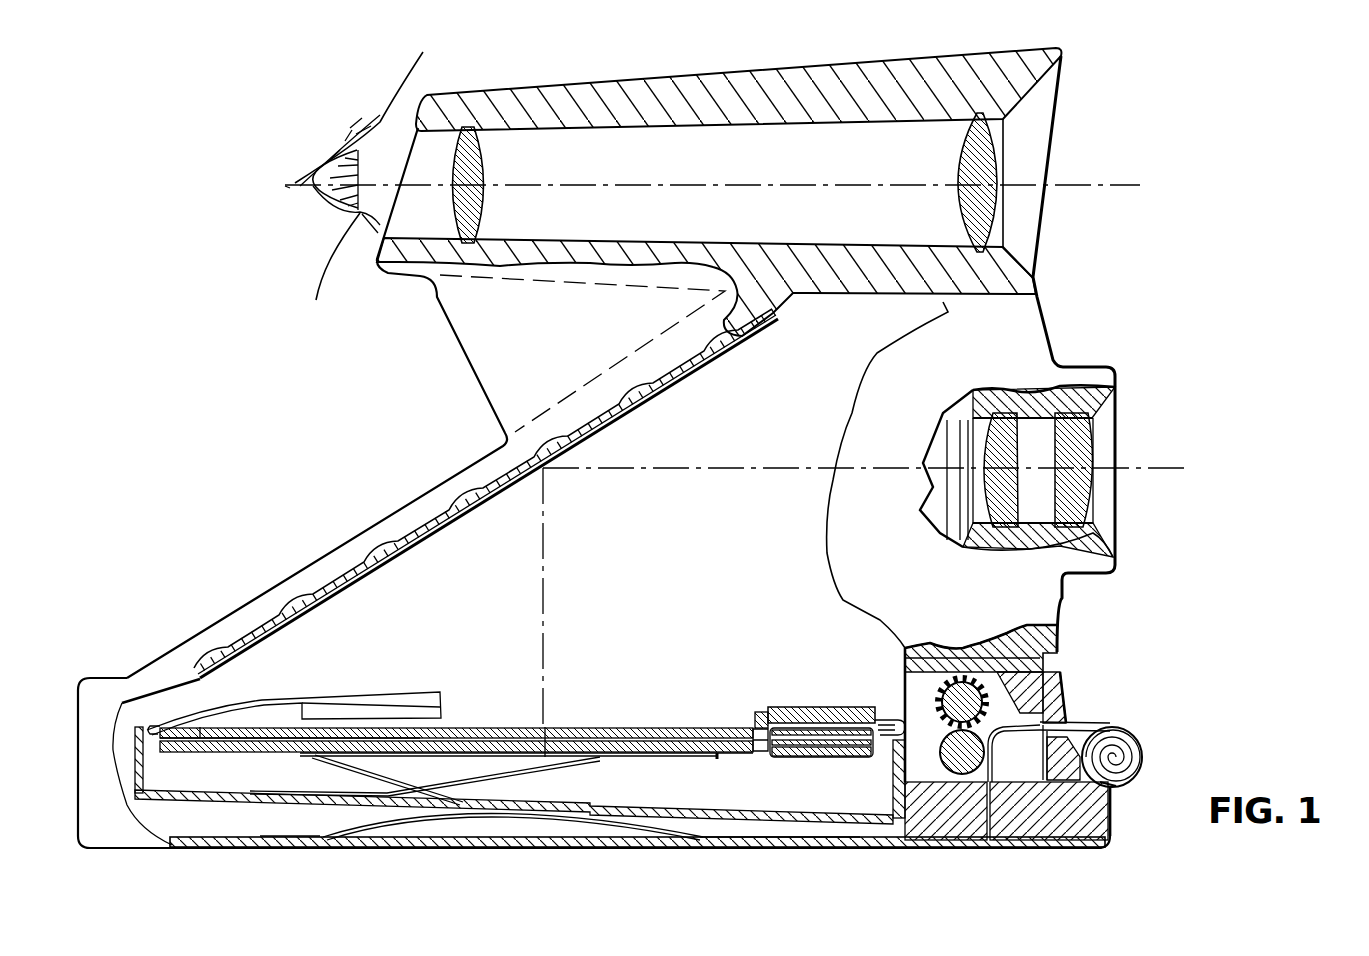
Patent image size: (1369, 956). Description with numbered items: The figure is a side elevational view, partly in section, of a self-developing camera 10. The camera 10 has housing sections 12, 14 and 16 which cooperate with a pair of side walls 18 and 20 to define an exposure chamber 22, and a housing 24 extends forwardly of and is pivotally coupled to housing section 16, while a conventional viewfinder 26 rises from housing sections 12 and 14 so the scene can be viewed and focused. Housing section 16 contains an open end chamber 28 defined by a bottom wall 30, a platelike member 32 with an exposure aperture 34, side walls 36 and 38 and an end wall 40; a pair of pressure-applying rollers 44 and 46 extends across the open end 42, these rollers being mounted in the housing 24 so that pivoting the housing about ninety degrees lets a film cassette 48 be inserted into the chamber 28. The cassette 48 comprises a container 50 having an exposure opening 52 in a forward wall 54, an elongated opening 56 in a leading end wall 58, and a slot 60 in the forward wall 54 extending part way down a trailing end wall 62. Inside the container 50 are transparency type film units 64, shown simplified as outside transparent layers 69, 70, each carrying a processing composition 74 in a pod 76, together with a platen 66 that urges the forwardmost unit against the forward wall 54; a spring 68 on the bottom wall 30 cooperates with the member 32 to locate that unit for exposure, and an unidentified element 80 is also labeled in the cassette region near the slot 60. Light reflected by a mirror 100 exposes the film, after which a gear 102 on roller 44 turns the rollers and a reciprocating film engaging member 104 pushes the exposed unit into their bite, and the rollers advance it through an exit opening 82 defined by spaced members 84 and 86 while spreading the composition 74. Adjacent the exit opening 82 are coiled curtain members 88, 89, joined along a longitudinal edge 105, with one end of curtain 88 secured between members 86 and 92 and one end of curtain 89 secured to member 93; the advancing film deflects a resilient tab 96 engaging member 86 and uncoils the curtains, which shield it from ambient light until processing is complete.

The camera 10 is at (1064, 158).
The housing section 12 is at (1127, 501).
The housing section 14 is at (418, 487).
The housing section 16 is at (427, 856).
The side wall 18 is at (870, 380).
The side wall 20 is at (606, 520).
The exposure chamber 22 is at (375, 606).
The housing 24 is at (949, 856).
The viewfinder 26 is at (661, 72).
The open end chamber 28 is at (261, 825).
The bottom wall 30 is at (535, 845).
The platelike member 32 is at (787, 707).
The exposure aperture 34 is at (758, 710).
The side wall 36 is at (93, 836).
The side wall 38 is at (206, 831).
The end wall 40 is at (77, 720).
The open end 42 is at (927, 828).
The roller 44 is at (961, 690).
The roller 46 is at (958, 766).
The film cassette 48 is at (631, 709).
The container 50 is at (780, 829).
The exposure opening 52 is at (755, 717).
The forward wall 54 is at (893, 717).
The elongated opening 56 is at (903, 733).
The leading end wall 58 is at (903, 766).
The slot 60 is at (141, 721).
The trailing end wall 62 is at (143, 770).
The film unit 64 is at (720, 770).
The platen 66 is at (573, 767).
The spring 68 is at (510, 813).
The outside transparent layer 69 is at (657, 754).
The outside transparent layer 70 is at (568, 743).
The processing composition 74 is at (813, 753).
The pod 76 is at (850, 760).
The plate end 80 is at (198, 750).
The exit opening 82 is at (1126, 715).
The member 84 is at (1070, 788).
The member 86 is at (1017, 680).
The curtain member 88 is at (1083, 724).
The curtain member 89 is at (1040, 750).
The member 92 is at (1063, 687).
The member 93 is at (1114, 780).
The resilient tab 96 is at (997, 773).
The mirror 100 is at (670, 385).
The gear 102 is at (928, 655).
The film engaging member 104 is at (262, 700).
The longitudinal edge 105 is at (1130, 736).